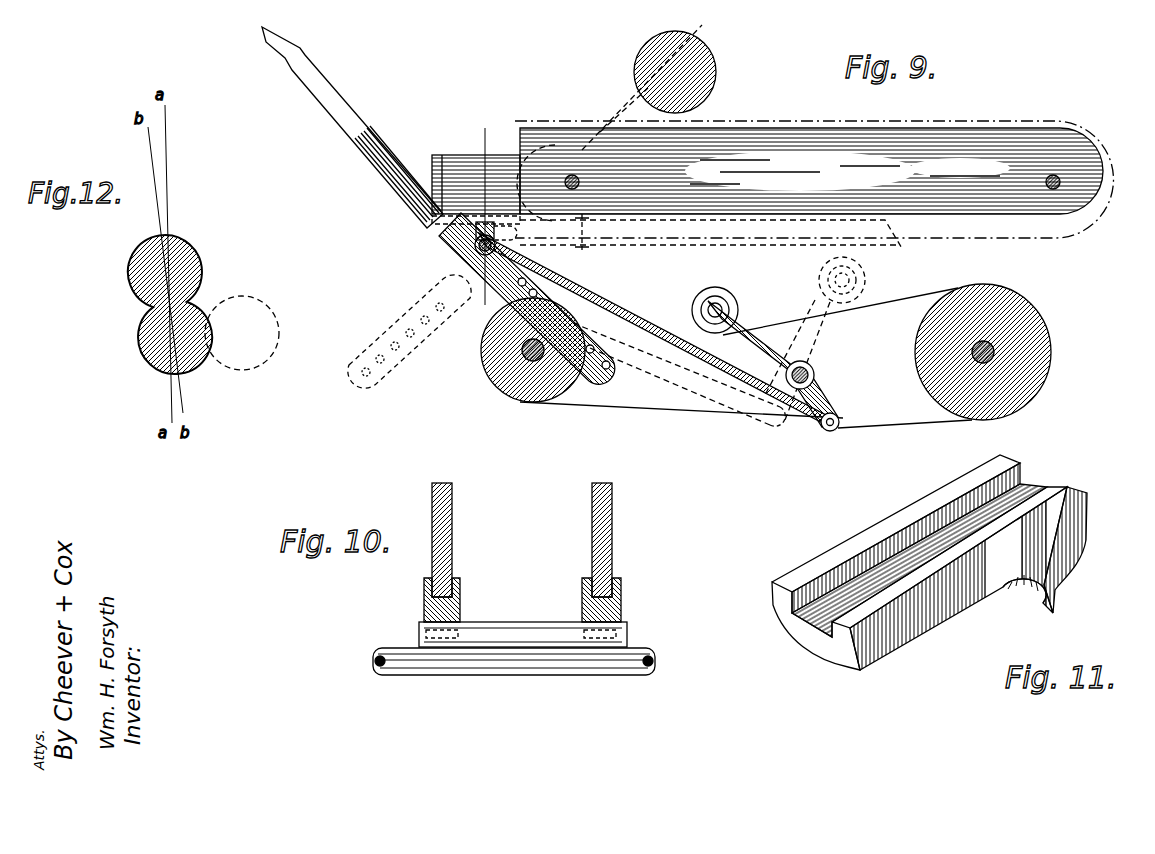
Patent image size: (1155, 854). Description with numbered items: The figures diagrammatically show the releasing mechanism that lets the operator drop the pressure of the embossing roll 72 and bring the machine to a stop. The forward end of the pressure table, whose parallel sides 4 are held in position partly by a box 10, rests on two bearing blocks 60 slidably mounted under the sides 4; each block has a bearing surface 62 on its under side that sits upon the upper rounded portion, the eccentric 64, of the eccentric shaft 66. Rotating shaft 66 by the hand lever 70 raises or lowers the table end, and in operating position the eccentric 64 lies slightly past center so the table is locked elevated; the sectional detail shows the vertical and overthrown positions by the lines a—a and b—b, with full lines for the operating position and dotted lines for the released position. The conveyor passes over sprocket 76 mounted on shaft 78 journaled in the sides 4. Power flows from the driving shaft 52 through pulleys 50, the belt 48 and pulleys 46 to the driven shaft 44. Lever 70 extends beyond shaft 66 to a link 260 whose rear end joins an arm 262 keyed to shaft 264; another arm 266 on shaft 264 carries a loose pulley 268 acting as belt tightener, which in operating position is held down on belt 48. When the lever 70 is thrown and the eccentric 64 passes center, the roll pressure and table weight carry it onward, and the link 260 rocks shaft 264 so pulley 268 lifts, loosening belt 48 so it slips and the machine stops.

In FIG. 9, the sides 4 is at (906, 145).
In FIG. 10, the sides 4 is at (432, 556).
In FIG. 9, the box 10 is at (497, 137).
In FIG. 9, the shaft 44 is at (995, 352).
In FIG. 9, the pulleys 46 is at (1038, 390).
In FIG. 9, the belt 48 is at (884, 305).
In FIG. 9, the pulleys 50 is at (512, 394).
In FIG. 9, the shaft 52 is at (522, 353).
In FIG. 9, the bearing blocks 60 is at (470, 232).
In FIG. 10, the bearing blocks 60 is at (423, 605).
In FIG. 11, the bearing blocks 60 is at (910, 508).
In FIG. 11, the bearing surfaces 62 is at (1030, 595).
In FIG. 9, the eccentric 64 is at (512, 236).
In FIG. 10, the eccentric 64 is at (524, 627).
In FIG. 12, the eccentric 64 is at (130, 278).
In FIG. 9, the eccentric shaft 66 is at (473, 250).
In FIG. 12, the eccentric shaft 66 is at (156, 368).
In FIG. 9, the hand lever 70 is at (350, 115).
In FIG. 9, the embossing roll 72 is at (703, 80).
In FIG. 9, the sprocket 76 is at (572, 175).
In FIG. 9, the shaft 78 is at (577, 243).
In FIG. 9, the link 260 is at (660, 308).
In FIG. 9, the arm 262 is at (825, 398).
In FIG. 9, the shaft 264 is at (815, 372).
In FIG. 9, the arm 266 is at (766, 336).
In FIG. 9, the pulley 268 is at (737, 288).